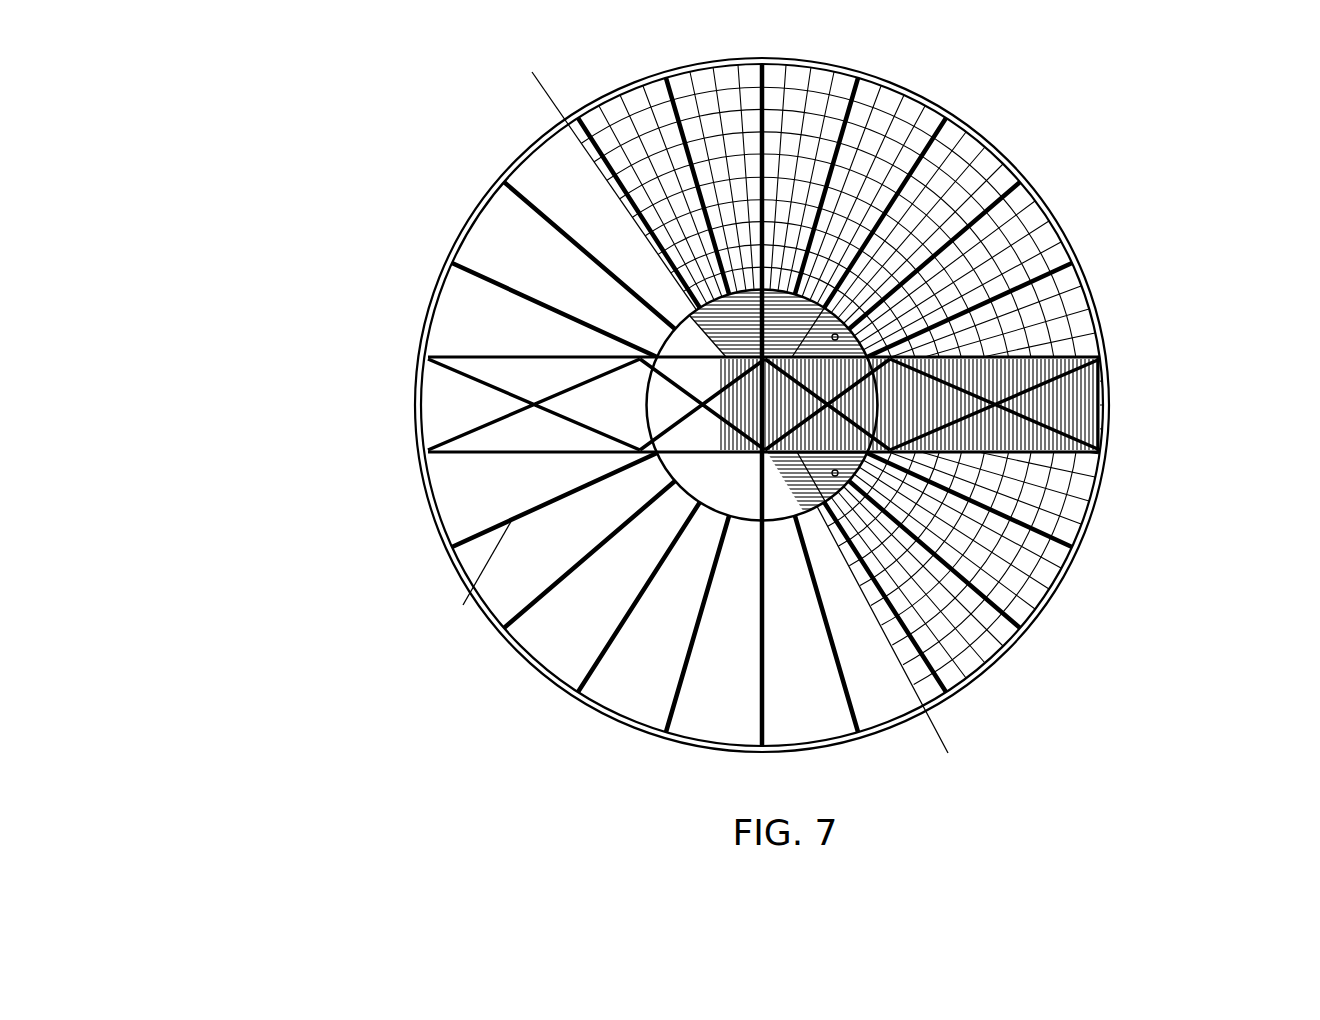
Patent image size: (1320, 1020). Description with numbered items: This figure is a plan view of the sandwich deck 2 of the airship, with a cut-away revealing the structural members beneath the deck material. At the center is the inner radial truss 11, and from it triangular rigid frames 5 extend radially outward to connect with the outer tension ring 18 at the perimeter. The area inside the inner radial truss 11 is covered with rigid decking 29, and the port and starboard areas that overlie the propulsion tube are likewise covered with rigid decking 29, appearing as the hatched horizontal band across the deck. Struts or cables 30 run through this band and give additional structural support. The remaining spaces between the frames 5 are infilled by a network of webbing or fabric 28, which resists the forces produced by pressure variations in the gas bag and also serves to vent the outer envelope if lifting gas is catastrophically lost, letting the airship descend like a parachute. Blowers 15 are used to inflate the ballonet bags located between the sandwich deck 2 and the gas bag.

The sandwich deck 2 is at (600, 108).
The triangular rigid frames 5 is at (563, 577).
The inner radial truss 11 is at (642, 335).
The blowers 15 is at (1005, 665).
The outer tension ring 18 is at (567, 703).
The webbing or fabric 28 is at (1063, 227).
The rigid decking 29 is at (815, 175).
The struts or cables 30 is at (753, 287).